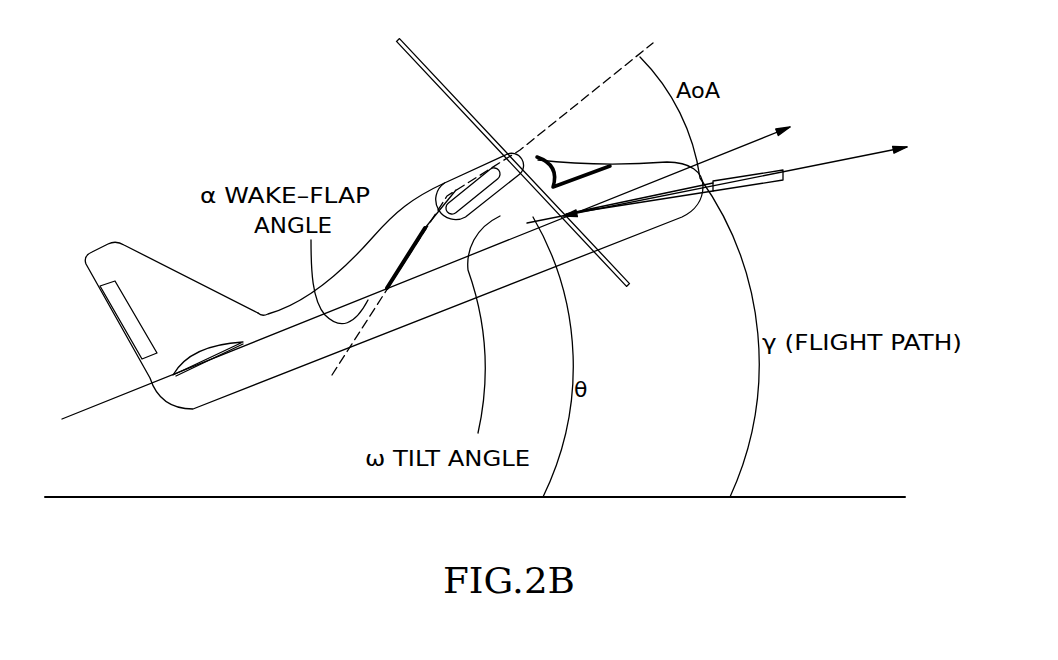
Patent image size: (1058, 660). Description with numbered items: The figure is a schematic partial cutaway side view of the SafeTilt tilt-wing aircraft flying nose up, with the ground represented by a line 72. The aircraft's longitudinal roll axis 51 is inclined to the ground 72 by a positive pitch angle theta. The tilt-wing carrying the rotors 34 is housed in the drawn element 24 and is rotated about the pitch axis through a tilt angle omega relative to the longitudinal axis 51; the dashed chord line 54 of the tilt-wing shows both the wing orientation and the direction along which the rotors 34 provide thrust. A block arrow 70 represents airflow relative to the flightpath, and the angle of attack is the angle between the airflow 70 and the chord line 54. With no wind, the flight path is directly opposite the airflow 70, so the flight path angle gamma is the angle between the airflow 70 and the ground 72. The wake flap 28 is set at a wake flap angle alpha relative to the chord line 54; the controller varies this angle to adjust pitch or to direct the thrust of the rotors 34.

The nacelle / propulsion unit 24 is at (470, 180).
The wake flap 28 is at (405, 252).
The rotors 34 is at (418, 64).
The longitudinal roll axis 51 is at (753, 140).
The chord line 54 is at (588, 97).
The airflow block arrow 70 is at (766, 185).
The ground 72 is at (840, 494).